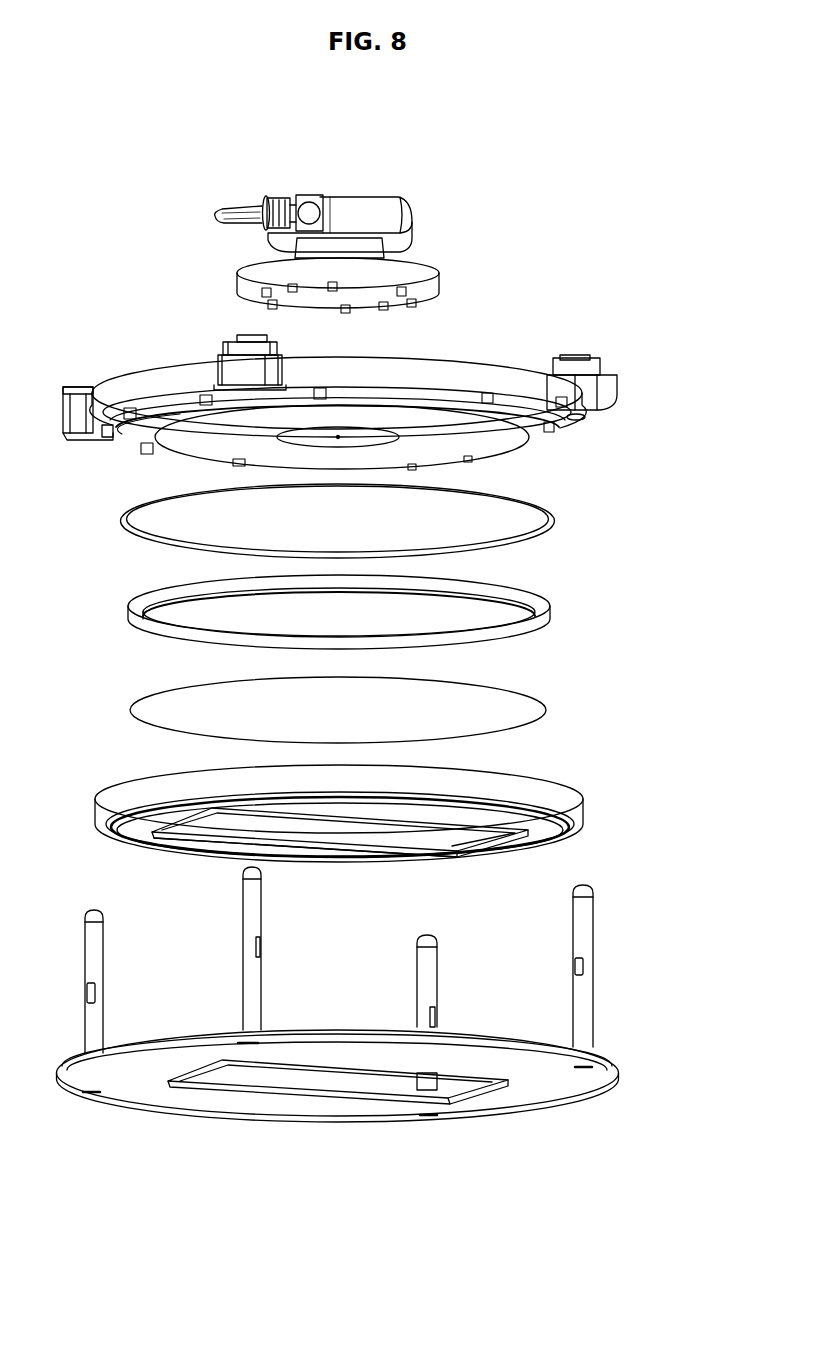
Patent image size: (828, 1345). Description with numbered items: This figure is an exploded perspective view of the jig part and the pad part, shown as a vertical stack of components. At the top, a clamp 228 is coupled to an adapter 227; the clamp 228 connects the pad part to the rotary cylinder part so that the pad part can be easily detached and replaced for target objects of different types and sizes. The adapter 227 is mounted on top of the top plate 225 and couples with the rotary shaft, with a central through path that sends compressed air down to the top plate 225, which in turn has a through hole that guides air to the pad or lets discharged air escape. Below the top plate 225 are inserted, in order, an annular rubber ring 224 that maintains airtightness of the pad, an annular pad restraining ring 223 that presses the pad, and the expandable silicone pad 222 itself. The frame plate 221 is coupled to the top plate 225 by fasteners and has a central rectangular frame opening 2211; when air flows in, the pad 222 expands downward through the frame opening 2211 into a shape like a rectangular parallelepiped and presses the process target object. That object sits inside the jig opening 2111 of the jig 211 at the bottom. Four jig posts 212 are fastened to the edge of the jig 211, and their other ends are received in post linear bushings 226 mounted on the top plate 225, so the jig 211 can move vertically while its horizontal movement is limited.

The jig 211 is at (374, 1113).
The jig opening 2111 is at (283, 1070).
The jig post 212 is at (583, 927).
The frame plate 221 is at (381, 840).
The frame opening 2211 is at (310, 818).
The pad 222 is at (523, 713).
The pad restraining ring 223 is at (543, 603).
The rubber ring 224 is at (555, 517).
The top plate 225 is at (492, 382).
The post linear bushing 226 is at (573, 372).
The adapter 227 is at (433, 272).
The clamp 228 is at (280, 197).